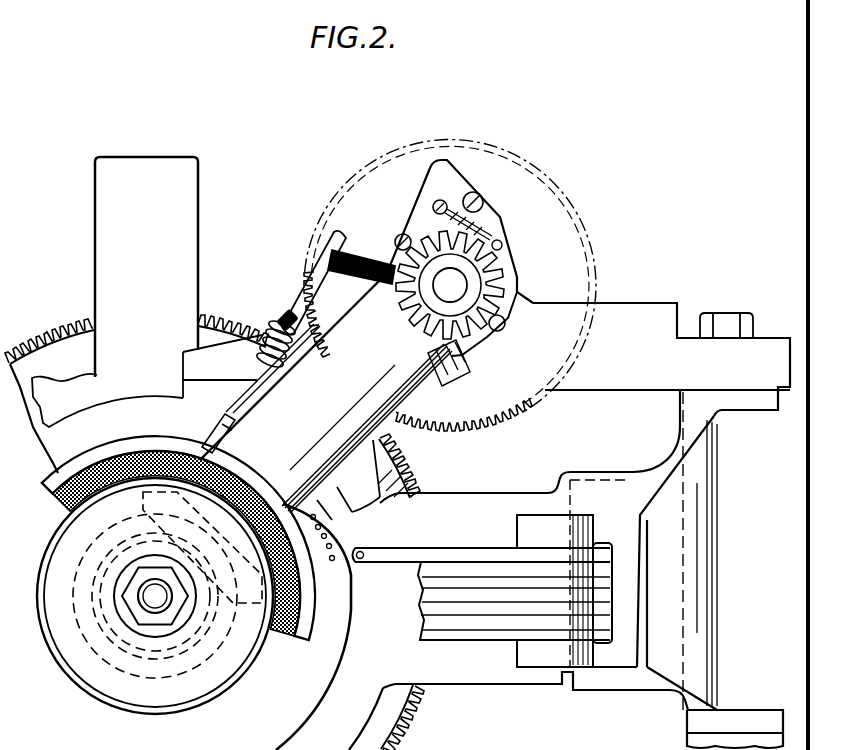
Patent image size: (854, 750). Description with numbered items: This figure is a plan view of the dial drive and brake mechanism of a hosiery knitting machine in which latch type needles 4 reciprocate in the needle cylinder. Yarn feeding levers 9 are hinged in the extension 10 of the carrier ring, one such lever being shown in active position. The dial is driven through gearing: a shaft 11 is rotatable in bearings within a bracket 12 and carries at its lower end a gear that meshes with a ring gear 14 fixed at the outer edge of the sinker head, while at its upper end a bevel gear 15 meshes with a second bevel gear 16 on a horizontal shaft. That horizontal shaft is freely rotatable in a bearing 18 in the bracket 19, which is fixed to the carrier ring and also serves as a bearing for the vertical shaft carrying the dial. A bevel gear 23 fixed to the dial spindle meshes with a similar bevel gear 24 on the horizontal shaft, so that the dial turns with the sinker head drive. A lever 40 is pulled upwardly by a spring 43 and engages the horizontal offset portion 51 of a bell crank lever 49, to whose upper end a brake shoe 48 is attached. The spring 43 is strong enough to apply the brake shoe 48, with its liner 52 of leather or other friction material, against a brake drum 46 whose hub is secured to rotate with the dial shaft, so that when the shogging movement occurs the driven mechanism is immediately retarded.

The latch type needles 4 is at (337, 561).
The yarn feeding levers 9 is at (386, 560).
The extension 10 is at (482, 503).
The shaft 11 is at (459, 277).
The bracket 12 is at (618, 307).
The ring gear 14 is at (412, 722).
The bevel gear 15 is at (490, 269).
The second bevel gear 16 is at (362, 260).
The bearing 18 is at (366, 336).
The bracket 19 is at (340, 496).
The bevel gear 23 is at (135, 666).
The bevel gear 24 is at (246, 604).
The lever 40 is at (222, 366).
The spring 43 is at (277, 323).
The brake drum 46 is at (168, 710).
The brake shoe 48 is at (302, 647).
The bell crank lever 49 is at (217, 424).
The horizontal offset portion 51 is at (270, 403).
The liner 52 is at (281, 640).